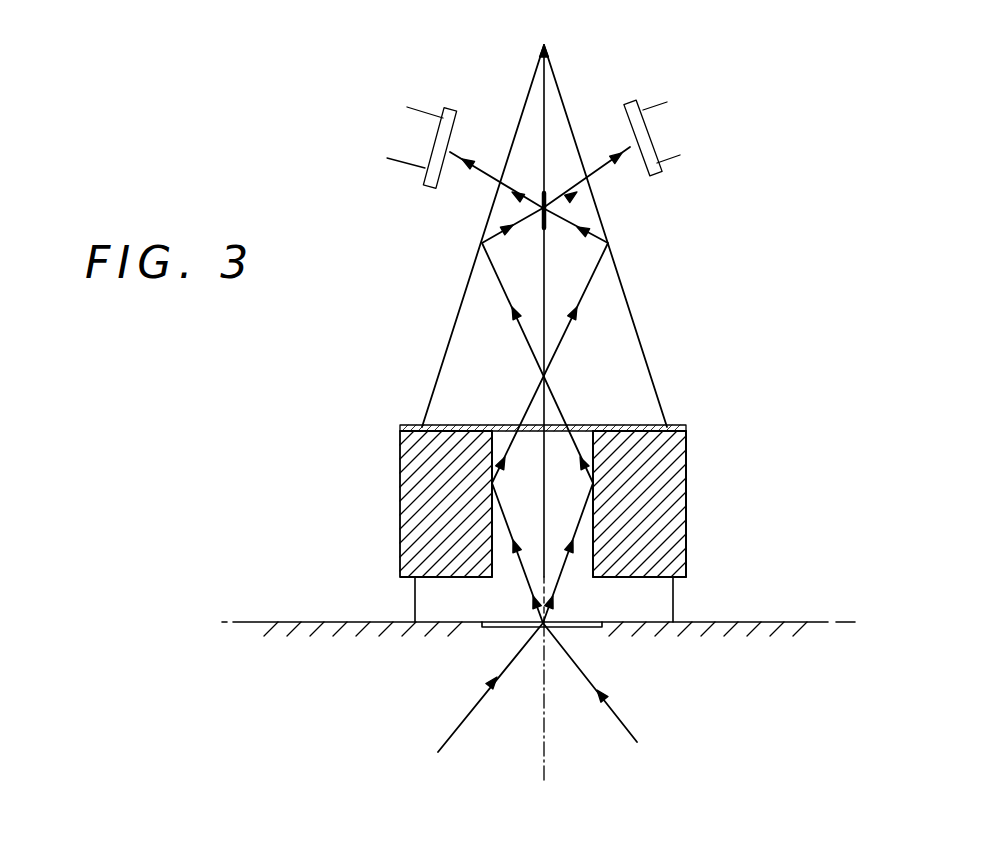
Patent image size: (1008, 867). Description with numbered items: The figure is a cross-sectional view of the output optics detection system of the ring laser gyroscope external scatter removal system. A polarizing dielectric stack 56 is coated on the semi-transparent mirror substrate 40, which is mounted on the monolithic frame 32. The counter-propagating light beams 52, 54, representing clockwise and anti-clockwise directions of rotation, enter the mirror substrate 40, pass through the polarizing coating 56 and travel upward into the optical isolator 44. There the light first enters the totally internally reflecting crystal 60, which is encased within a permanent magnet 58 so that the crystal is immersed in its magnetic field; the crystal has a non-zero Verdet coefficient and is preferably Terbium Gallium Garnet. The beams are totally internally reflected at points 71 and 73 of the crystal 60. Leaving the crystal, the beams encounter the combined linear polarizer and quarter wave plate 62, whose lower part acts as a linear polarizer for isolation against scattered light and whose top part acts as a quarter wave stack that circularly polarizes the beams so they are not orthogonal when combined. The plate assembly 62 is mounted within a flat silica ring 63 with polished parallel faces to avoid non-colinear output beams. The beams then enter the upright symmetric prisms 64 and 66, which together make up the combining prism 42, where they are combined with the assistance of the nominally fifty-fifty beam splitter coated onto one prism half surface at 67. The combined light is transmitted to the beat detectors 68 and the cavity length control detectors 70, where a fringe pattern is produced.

The monolithic frame 32 is at (325, 668).
The semi-transparent mirror substrate 40 is at (676, 604).
The combining optic prism 42 is at (648, 308).
The optical isolator 44 is at (693, 490).
The light beam 52 is at (483, 697).
The light beam 54 is at (632, 732).
The polarizing dielectric stack 56 is at (595, 630).
The permanent magnet 58 is at (401, 447).
The totally internally reflecting crystal 60 is at (543, 492).
The combined linear polarizer and quarter wave plate 62 is at (577, 426).
The flat silica ring 63 is at (410, 425).
The upright symmetric prism 64 is at (472, 321).
The upright symmetric prism 66 is at (638, 395).
The beam splitter 67 is at (547, 205).
The beat detectors 68 is at (631, 106).
The cavity length control detectors 70 is at (453, 122).
The total internal reflection point 71 is at (492, 478).
The total internal reflection point 73 is at (593, 490).